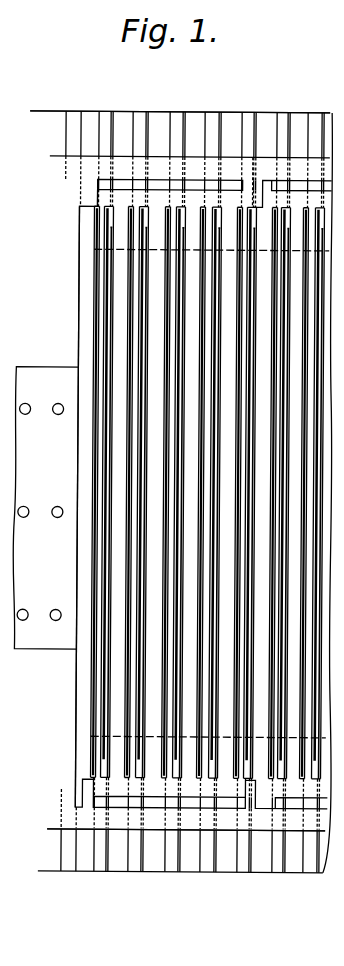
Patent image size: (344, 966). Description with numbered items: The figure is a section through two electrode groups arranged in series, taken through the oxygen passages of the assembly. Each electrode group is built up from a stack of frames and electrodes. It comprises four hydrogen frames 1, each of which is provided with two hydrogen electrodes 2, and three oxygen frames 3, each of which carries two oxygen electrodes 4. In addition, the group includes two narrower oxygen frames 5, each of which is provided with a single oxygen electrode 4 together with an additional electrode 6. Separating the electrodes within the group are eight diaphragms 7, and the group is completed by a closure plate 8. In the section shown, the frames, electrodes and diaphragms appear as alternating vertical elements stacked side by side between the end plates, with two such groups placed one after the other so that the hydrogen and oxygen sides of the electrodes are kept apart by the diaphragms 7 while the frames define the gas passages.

The hydrogen frame 1 is at (235, 125).
The hydrogen electrode 2 is at (132, 350).
The oxygen frame 3 is at (213, 155).
The oxygen electrode 4 is at (108, 308).
The narrower oxygen frame 5 is at (280, 123).
The additional electrode 6 is at (97, 266).
The diaphragm 7 is at (242, 863).
The closure plate 8 is at (264, 734).